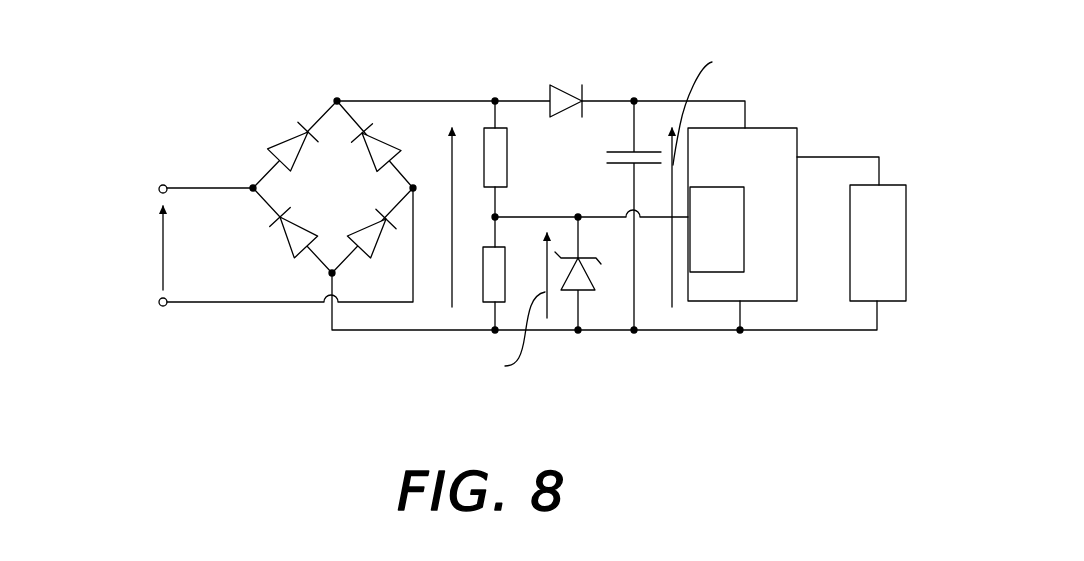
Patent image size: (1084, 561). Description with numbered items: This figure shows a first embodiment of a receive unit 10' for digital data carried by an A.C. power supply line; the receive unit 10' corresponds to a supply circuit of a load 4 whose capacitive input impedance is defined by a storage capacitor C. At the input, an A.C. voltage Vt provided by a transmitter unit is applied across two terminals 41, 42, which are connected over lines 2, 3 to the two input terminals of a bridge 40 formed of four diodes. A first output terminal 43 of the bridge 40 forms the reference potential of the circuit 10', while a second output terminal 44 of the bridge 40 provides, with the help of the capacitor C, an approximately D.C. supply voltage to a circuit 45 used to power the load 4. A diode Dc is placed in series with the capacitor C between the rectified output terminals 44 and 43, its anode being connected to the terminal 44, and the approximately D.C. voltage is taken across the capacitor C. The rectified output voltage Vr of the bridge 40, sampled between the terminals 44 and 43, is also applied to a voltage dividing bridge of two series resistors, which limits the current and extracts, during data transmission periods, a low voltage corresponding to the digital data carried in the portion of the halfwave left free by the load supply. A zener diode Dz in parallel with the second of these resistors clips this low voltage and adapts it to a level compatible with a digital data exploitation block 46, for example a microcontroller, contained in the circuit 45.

The first input line 2 is at (211, 188).
The second input line 3 is at (216, 305).
The load 4 is at (907, 208).
The receive unit 10' is at (529, 202).
The bridge 40 is at (282, 86).
The terminal 41 is at (160, 192).
The terminal 42 is at (163, 306).
The first output terminal 43 is at (331, 274).
The second output terminal 44 is at (337, 100).
The circuit 45 is at (800, 130).
The digital data exploitation block 46 is at (708, 187).